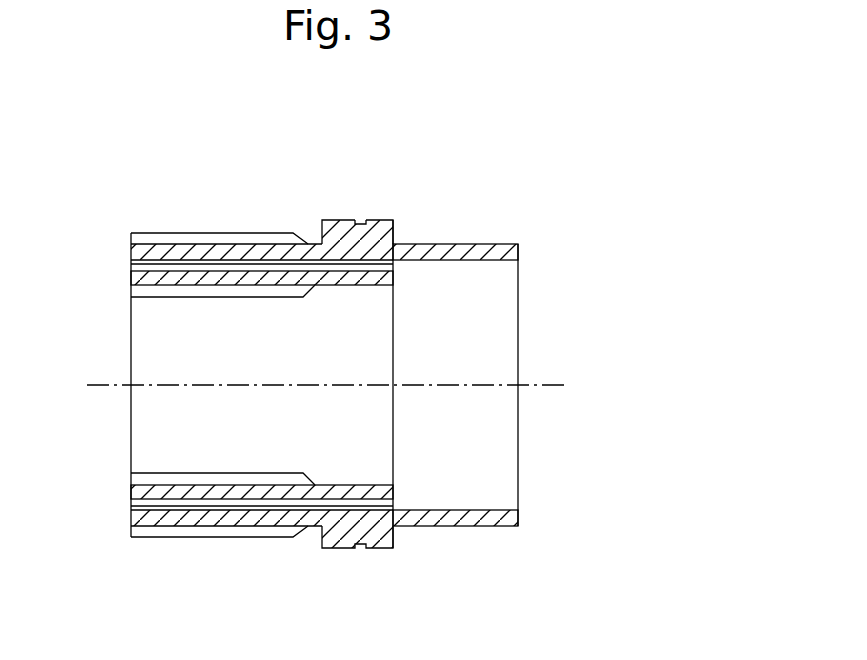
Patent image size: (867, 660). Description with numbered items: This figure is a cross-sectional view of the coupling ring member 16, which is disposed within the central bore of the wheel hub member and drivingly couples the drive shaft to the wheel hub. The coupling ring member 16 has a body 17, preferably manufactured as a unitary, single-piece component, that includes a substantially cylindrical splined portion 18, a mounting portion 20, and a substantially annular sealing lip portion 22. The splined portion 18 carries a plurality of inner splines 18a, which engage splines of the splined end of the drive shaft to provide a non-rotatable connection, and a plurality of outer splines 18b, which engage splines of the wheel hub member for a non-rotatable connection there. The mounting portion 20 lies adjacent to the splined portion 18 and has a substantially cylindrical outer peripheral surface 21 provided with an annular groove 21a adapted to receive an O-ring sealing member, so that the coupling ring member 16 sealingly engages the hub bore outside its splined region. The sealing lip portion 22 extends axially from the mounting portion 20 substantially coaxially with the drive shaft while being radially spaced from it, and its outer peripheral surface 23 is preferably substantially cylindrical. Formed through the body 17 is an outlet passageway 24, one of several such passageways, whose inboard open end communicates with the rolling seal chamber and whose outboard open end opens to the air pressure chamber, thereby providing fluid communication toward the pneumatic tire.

The coupling ring member 16 is at (310, 157).
The body 17 is at (388, 233).
The splined portion 18 is at (219, 522).
The inner splines 18a is at (210, 298).
The outer splines 18b is at (212, 232).
The mounting portion 20 is at (347, 548).
The outer peripheral surface 21 is at (382, 221).
The annular groove 21a is at (357, 221).
The sealing lip portion 22 is at (478, 527).
The outer peripheral surface 23 is at (492, 243).
The outlet passageway 24 is at (133, 264).